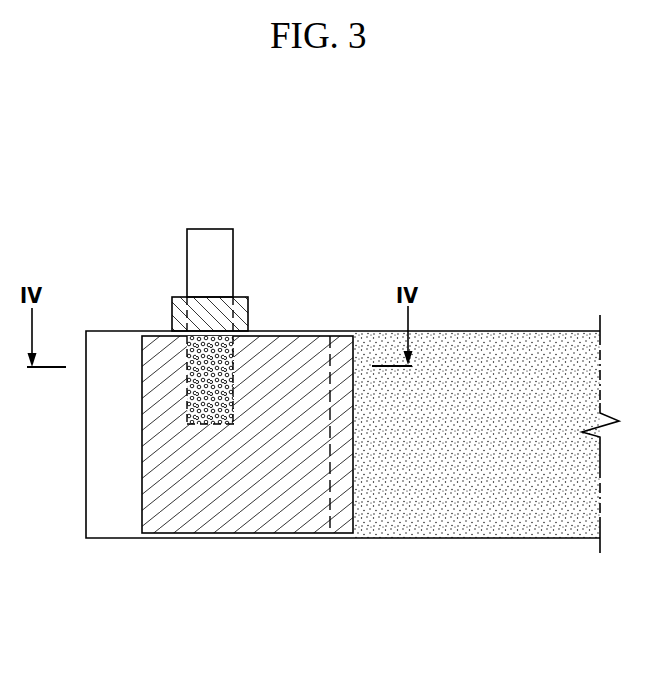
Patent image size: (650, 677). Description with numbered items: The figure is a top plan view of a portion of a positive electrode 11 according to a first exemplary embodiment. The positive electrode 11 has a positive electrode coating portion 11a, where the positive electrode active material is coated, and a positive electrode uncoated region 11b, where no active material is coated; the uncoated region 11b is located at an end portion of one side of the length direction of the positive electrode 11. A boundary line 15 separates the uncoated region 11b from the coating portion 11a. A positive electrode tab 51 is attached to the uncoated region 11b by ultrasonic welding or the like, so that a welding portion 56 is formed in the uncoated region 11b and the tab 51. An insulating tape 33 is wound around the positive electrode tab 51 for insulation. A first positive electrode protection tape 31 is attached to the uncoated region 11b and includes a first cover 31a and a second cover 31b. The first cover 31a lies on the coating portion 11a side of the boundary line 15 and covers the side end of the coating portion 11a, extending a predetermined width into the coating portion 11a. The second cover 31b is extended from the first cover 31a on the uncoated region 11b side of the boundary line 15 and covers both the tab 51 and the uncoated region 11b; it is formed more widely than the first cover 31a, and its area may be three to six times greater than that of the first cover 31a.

The positive electrode 11 is at (352, 429).
The positive electrode coating portion 11a is at (493, 526).
The positive electrode uncoated region 11b is at (113, 530).
The boundary line 15 is at (332, 373).
The first positive electrode protection tape 31 is at (257, 454).
The first cover 31a is at (345, 522).
The second cover 31b is at (290, 522).
The insulating tape 33 is at (242, 307).
The positive electrode tab 51 is at (215, 233).
The welding portion 56 is at (215, 424).